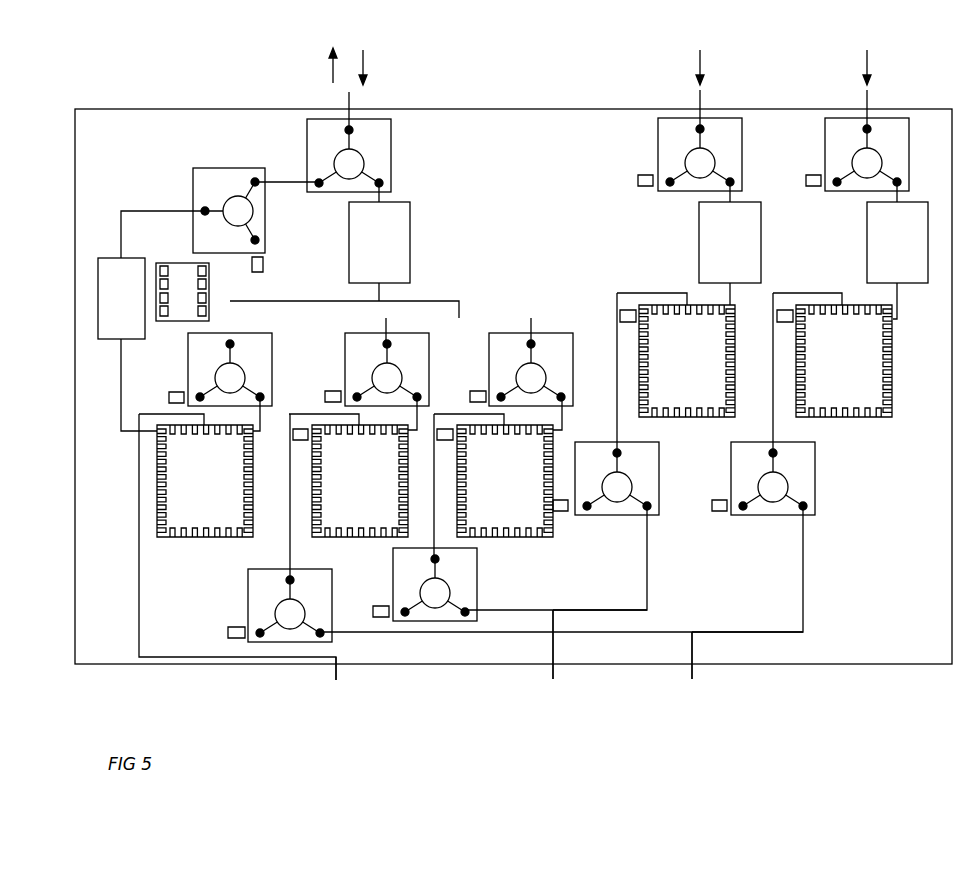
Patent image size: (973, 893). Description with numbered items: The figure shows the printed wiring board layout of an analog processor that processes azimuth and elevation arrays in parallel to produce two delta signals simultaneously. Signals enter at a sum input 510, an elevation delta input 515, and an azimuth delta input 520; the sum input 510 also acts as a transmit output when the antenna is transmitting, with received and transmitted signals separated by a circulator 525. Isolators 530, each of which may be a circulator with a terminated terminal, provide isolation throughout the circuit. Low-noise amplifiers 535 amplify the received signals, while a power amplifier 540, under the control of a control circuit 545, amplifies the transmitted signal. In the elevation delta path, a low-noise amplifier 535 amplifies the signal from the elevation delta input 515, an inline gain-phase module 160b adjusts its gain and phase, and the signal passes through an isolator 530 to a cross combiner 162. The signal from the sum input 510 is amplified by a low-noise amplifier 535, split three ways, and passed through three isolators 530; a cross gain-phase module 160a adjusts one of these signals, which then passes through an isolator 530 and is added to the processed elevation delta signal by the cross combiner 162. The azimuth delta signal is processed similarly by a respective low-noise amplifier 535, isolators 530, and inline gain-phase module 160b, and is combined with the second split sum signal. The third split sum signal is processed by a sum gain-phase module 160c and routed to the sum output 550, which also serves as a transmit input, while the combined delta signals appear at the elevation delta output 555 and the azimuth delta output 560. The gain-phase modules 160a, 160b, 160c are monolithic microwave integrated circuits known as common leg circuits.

The sum input 510 is at (344, 98).
The elevation delta input 515 is at (697, 97).
The azimuth delta input 520 is at (864, 97).
The circulator 525 is at (391, 142).
The isolator 530 is at (193, 186).
The low-noise amplifier 535 is at (349, 252).
The power amplifier 540 is at (145, 339).
The control circuit 545 is at (209, 268).
The sum output 550 is at (333, 675).
The elevation delta output 555 is at (551, 674).
The azimuth delta output 560 is at (690, 676).
The cross gain-phase module 160a is at (340, 537).
The inline gain-phase module 160b is at (667, 416).
The sum gain-phase module 160c is at (180, 537).
The cross combiner 162 is at (557, 602).